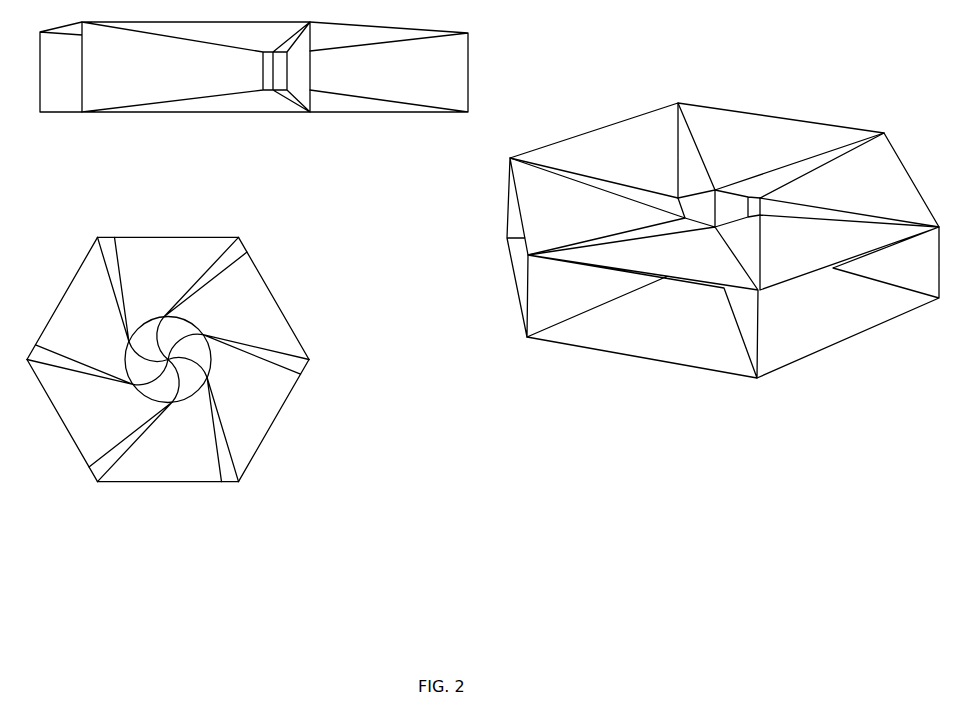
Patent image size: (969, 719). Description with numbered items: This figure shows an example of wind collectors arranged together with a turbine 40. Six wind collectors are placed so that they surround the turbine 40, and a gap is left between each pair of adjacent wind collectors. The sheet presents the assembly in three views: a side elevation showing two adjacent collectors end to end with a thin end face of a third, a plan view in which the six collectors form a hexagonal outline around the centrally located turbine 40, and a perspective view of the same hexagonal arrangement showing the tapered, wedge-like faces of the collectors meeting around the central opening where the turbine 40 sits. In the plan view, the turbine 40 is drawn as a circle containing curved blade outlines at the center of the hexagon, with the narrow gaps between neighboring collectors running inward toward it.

The turbine 40 is at (153, 334).